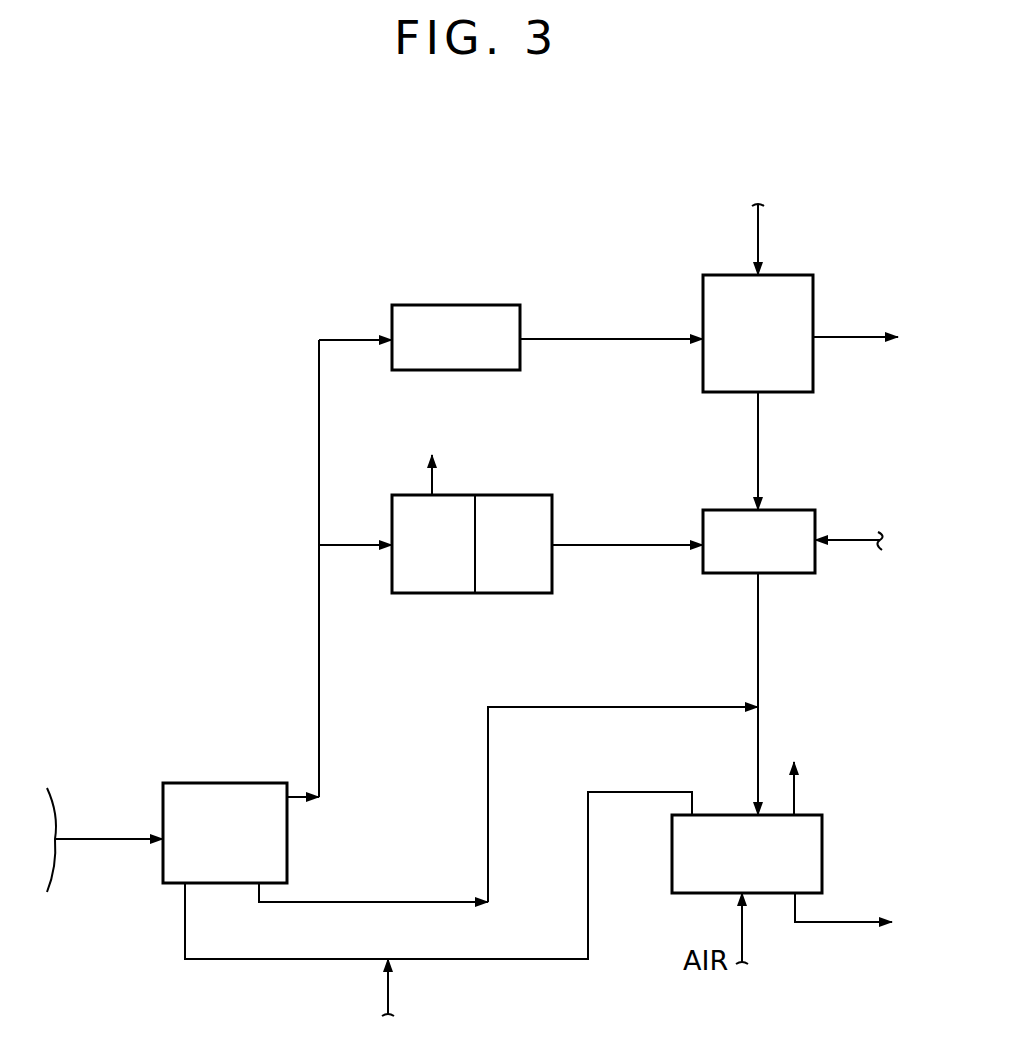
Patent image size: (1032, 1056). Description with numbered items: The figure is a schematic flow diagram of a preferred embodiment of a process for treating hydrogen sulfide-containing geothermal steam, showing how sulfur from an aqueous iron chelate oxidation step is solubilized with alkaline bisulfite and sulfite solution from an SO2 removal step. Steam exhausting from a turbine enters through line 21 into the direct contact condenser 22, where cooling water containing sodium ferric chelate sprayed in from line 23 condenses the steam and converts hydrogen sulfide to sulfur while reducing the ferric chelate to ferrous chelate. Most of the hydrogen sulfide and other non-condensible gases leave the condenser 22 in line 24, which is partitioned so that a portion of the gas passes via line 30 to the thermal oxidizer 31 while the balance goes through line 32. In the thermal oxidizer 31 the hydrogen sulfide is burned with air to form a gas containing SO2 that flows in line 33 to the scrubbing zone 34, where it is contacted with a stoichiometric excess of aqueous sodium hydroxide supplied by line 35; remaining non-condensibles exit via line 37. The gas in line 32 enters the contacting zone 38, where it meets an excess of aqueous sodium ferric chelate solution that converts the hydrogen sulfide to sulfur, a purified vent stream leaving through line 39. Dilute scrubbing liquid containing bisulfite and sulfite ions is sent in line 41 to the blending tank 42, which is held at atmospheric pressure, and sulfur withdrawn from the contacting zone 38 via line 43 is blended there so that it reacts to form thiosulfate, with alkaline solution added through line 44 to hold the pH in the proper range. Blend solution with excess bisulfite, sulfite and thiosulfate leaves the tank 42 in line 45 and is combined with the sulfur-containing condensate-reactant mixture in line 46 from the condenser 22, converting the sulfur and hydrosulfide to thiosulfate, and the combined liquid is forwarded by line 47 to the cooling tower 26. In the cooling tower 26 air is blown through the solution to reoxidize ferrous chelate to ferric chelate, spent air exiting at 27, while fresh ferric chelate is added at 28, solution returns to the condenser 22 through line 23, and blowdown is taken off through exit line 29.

The line 21 is at (102, 841).
The direct contact condensation zone or condenser 22 is at (273, 838).
The line 23 is at (302, 960).
The line 24 is at (319, 688).
The cooling tower 26 is at (822, 854).
The spent air exit 27 is at (794, 790).
The ferric chelate addition point 28 is at (388, 986).
The exit line 29 is at (842, 923).
The line 30 is at (319, 428).
The thermal oxidizer 31 is at (465, 350).
The line 32 is at (357, 547).
The line 33 is at (607, 341).
The scrubbing zone 34 is at (800, 362).
The line 35 is at (758, 233).
The line 37 is at (845, 336).
The contacting zone 38 is at (476, 497).
The line 39 is at (432, 473).
The line 41 is at (758, 456).
The blending zone or tank 42 is at (792, 524).
The line 43 is at (630, 547).
The line 44 is at (855, 541).
The line 45 is at (758, 663).
The line 46 is at (488, 750).
The line 47 is at (758, 753).